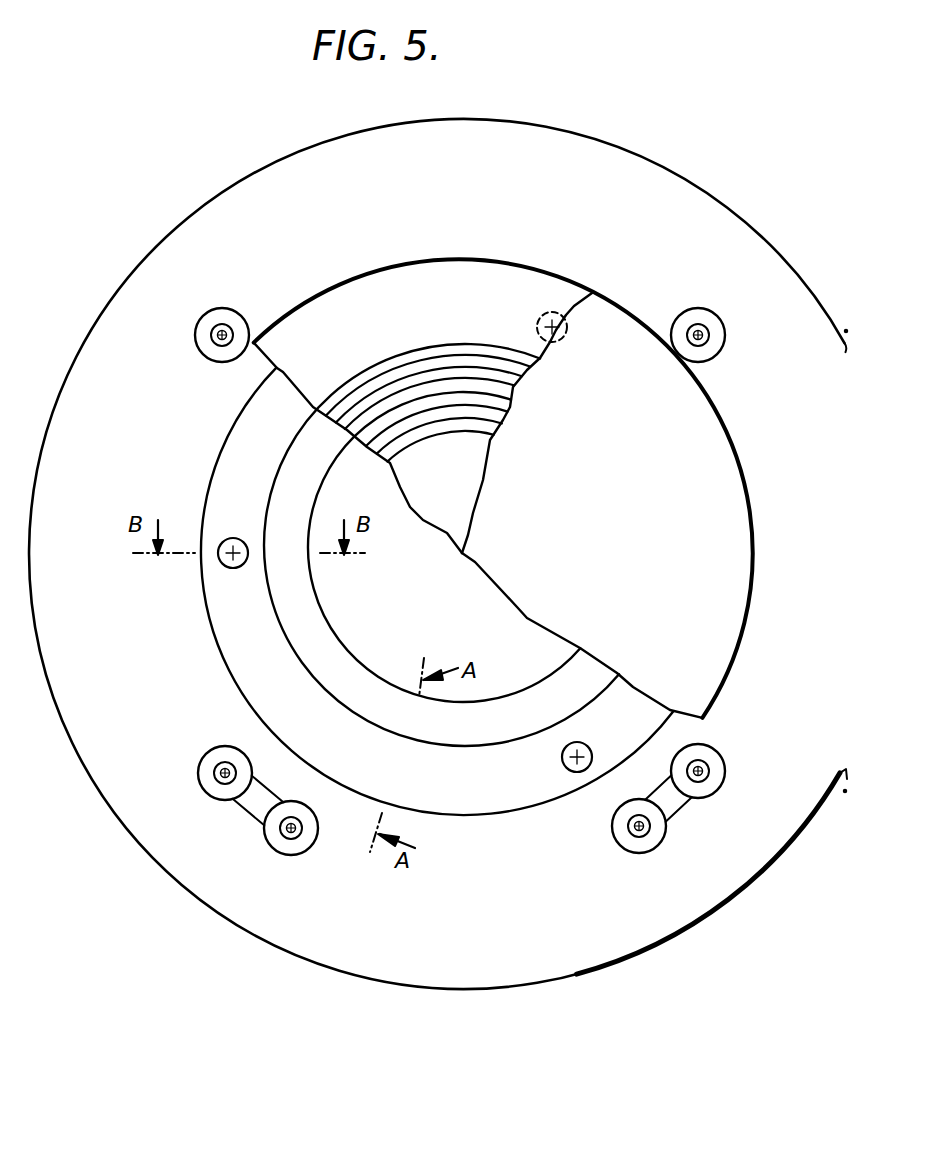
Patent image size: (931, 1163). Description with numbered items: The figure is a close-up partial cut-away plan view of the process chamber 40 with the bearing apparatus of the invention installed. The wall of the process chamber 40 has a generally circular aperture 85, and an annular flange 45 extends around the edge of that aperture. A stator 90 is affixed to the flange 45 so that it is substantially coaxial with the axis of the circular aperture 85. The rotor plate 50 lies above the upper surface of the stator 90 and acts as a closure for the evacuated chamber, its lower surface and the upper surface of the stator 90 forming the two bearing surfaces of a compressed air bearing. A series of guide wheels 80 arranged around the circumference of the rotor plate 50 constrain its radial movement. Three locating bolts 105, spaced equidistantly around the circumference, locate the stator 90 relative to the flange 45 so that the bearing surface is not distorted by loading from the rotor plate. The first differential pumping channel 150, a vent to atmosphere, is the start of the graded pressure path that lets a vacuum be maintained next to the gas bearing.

The process chamber 40 is at (312, 964).
The annular flange 45 is at (252, 426).
The rotor plate 50 is at (688, 405).
The guide wheels 80 is at (695, 308).
The circular aperture 85 is at (357, 622).
The stator 90 is at (422, 284).
The locating bolts 105 is at (221, 565).
The first differential pumping channel 150 is at (545, 313).